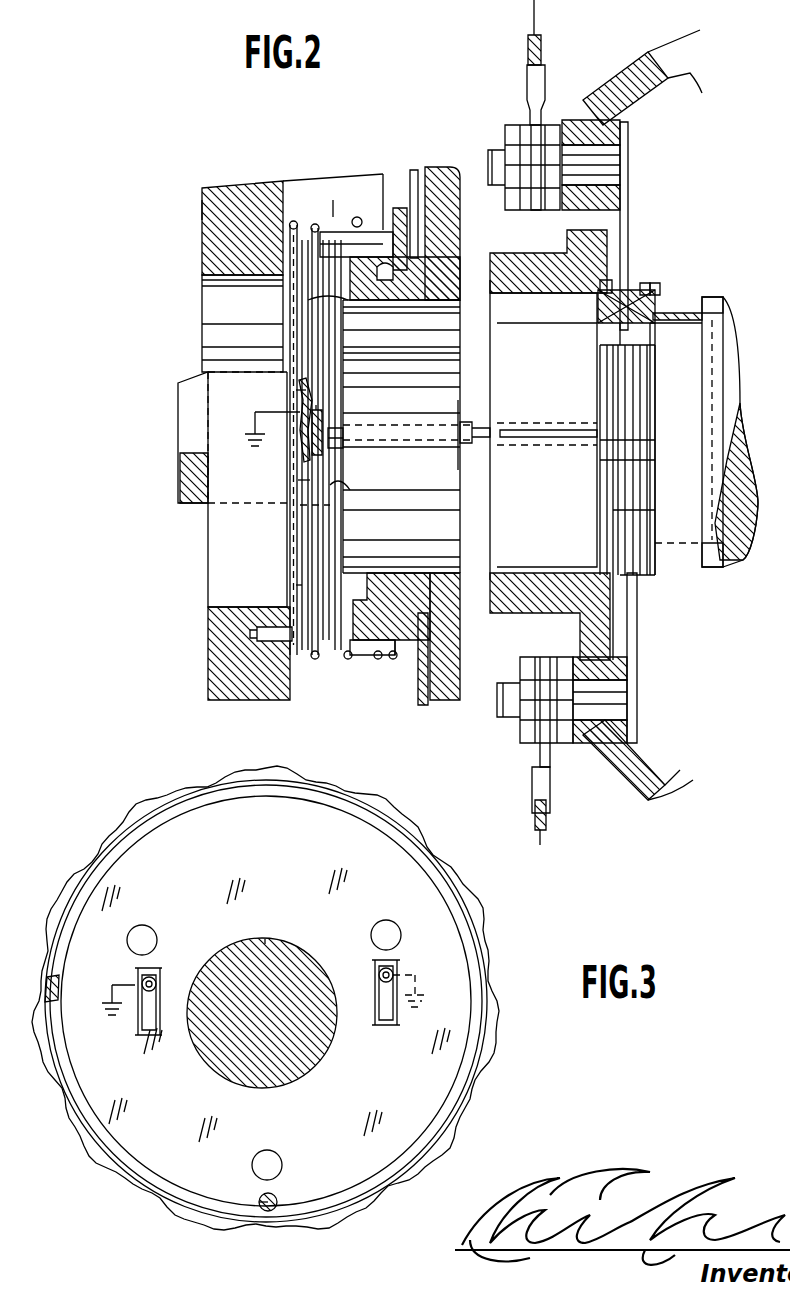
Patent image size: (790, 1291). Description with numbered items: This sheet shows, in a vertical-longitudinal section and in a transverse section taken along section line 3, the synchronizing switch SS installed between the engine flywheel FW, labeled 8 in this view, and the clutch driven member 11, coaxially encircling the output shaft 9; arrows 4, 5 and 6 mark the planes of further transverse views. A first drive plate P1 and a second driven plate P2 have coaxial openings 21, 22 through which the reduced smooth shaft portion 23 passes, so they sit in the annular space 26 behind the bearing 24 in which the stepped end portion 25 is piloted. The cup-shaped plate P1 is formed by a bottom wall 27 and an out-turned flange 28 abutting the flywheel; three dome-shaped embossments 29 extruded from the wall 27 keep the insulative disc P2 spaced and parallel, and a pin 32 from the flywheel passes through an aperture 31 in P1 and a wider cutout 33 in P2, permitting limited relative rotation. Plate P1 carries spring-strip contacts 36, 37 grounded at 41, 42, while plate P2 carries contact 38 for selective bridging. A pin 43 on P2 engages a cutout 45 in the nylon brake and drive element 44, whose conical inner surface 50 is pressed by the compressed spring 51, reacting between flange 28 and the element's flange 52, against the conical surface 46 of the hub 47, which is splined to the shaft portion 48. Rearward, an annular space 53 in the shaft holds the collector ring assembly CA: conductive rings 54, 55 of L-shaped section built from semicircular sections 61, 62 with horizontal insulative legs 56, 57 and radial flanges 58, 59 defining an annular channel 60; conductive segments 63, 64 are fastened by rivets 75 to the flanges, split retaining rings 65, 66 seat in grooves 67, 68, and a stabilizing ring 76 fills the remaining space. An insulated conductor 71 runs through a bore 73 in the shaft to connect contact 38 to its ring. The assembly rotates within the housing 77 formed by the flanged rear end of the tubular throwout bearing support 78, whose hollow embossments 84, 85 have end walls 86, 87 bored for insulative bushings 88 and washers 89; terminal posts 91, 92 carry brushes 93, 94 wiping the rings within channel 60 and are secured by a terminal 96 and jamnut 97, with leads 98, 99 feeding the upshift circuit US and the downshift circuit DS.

In FIG. 2, the flywheel 8 is at (232, 190).
In FIG. 3, the flywheel 8 is at (188, 792).
In FIG. 2, the flywheel FW is at (198, 214).
In FIG. 3, the flywheel FW is at (125, 812).
In FIG. 2, the first (drive) plate P1 is at (296, 289).
In FIG. 3, the first (drive) plate P1 is at (222, 836).
In FIG. 2, the second (driven) plate P2 is at (326, 343).
In FIG. 2, the section line 3- 3 is at (308, 207).
In FIG. 2, the section line 4 is at (303, 192).
In FIG. 2, the section line 5 is at (323, 208).
In FIG. 2, the section line 6 is at (600, 237).
In FIG. 2, the output shaft 9 is at (458, 410).
In FIG. 3, the output shaft 9 is at (231, 1013).
In FIG. 2, the clutch driven member 11 is at (462, 666).
In FIG. 2, the circular opening 21 is at (298, 517).
In FIG. 2, the circular opening 22 is at (350, 502).
In FIG. 2, the forward smooth shaft portion 23 is at (330, 480).
In FIG. 3, the forward smooth shaft portion 23 is at (276, 938).
In FIG. 2, the bearing 24 is at (208, 580).
In FIG. 2, the stepped smooth terminating portion 25 is at (183, 502).
In FIG. 2, the annular space 26 is at (300, 483).
In FIG. 2, the vertical (bottom) wall 27 is at (300, 470).
In FIG. 2, the annular flange 28 is at (296, 206).
In FIG. 3, the annular flange 28 is at (462, 1073).
In FIG. 2, the dome-shaped embossments 29 is at (300, 344).
In FIG. 3, the dome-shaped embossments 29 is at (157, 929).
In FIG. 2, the circular aperture 31 is at (294, 590).
In FIG. 3, the circular aperture 31 is at (275, 1196).
In FIG. 2, the pin 32 is at (278, 638).
In FIG. 3, the pin 32 is at (259, 1202).
In FIG. 2, the cutout 33 is at (391, 606).
In FIG. 2, the fixed flexible contact 36 is at (320, 418).
In FIG. 3, the fixed flexible contact 36 is at (155, 1015).
In FIG. 3, the fixed flexible contact 37 is at (370, 1015).
In FIG. 2, the movable contact 38 is at (340, 450).
In FIG. 2, the ground 41 is at (255, 412).
In FIG. 3, the ground 41 is at (115, 983).
In FIG. 3, the ground 42 is at (415, 975).
In FIG. 2, the pin 43 is at (380, 207).
In FIG. 2, the brake and drive element 44 is at (423, 684).
In FIG. 2, the cutout 45 is at (397, 205).
In FIG. 2, the exterior conical surface 46 is at (462, 642).
In FIG. 2, the hub 47 is at (463, 244).
In FIG. 2, the forward splined portion 48 is at (446, 353).
In FIG. 2, the conical friction surface 50 is at (405, 278).
In FIG. 2, the compressed spring 51 is at (379, 660).
In FIG. 3, the compressed spring 51 is at (450, 1108).
In FIG. 2, the circular flange 52 is at (416, 190).
In FIG. 2, the annular space 53 is at (703, 330).
In FIG. 2, the annular conductive ring 54 is at (598, 357).
In FIG. 2, the annular conductive ring 55 is at (655, 466).
In FIG. 2, the horizontal insulative flange 56 is at (600, 340).
In FIG. 2, the horizontal insulative flange 57 is at (650, 330).
In FIG. 2, the radial insulative flange 58 is at (600, 315).
In FIG. 2, the radial insulative flange 59 is at (662, 300).
In FIG. 2, the annular channel 60 is at (632, 577).
In FIG. 2, the semicircular section 61 is at (600, 386).
In FIG. 2, the semicircular section 62 is at (650, 392).
In FIG. 2, the conductive segment 63 is at (616, 390).
In FIG. 2, the conductive segment 64 is at (620, 510).
In FIG. 2, the split-type retaining ring 65 is at (575, 293).
In FIG. 2, the split-type retaining ring 66 is at (613, 286).
In FIG. 2, the annular groove 67 is at (602, 460).
In FIG. 2, the annular groove 68 is at (652, 422).
In FIG. 2, the insulated conductor 71 is at (462, 445).
In FIG. 2, the channel (bore) 73 is at (410, 430).
In FIG. 2, the rivets 75 is at (655, 290).
In FIG. 2, the split-type stabilizing ring 76 is at (700, 309).
In FIG. 2, the housing 77 is at (655, 782).
In FIG. 2, the tubular throwout bearing support member 78 is at (572, 255).
In FIG. 2, the hollow embossment 84 is at (595, 760).
In FIG. 2, the hollow embossment 85 is at (626, 66).
In FIG. 2, the vertical end wall 86 is at (580, 628).
In FIG. 2, the vertical end wall 87 is at (600, 118).
In FIG. 2, the flanged insulative bushing 88 is at (617, 200).
In FIG. 2, the insulative washer 89 is at (557, 120).
In FIG. 2, the terminal post 91 is at (505, 718).
In FIG. 2, the terminal post 92 is at (500, 148).
In FIG. 2, the flexible contact (brush) 93 is at (640, 660).
In FIG. 2, the flexible contact (brush) 94 is at (630, 212).
In FIG. 2, the terminal 96 is at (532, 793).
In FIG. 2, the jamnut 97 is at (530, 745).
In FIG. 2, the lead 98 is at (535, 818).
In FIG. 2, the lead 99 is at (528, 55).
In FIG. 2, the downshifting electric circuit DS is at (545, 40).
In FIG. 2, the upshifting electric circuit US is at (555, 835).
In FIG. 2, the collector ring assembly CA is at (598, 478).
In FIG. 2, the synchronizing switch SS is at (290, 390).